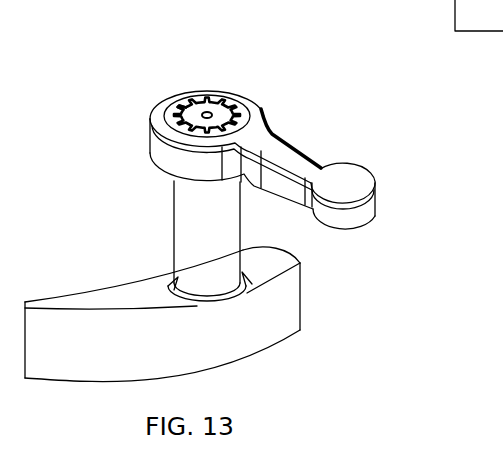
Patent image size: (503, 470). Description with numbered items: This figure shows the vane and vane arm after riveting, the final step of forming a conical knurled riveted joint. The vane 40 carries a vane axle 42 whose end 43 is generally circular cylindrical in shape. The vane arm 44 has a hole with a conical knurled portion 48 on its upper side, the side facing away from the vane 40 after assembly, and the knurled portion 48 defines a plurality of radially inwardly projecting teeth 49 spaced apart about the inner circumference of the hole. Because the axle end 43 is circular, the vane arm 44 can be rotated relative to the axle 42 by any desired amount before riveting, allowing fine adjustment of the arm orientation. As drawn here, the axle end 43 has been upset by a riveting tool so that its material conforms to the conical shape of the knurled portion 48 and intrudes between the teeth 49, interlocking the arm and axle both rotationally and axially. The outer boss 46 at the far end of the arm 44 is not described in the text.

The vane 40 is at (127, 296).
The vane axle 42 is at (197, 215).
The axle end 43 is at (222, 112).
The vane arm 44 is at (295, 157).
The boss 46 is at (347, 184).
The conical knurled portion 48 is at (173, 115).
The radially inwardly projecting teeth 49 is at (193, 105).